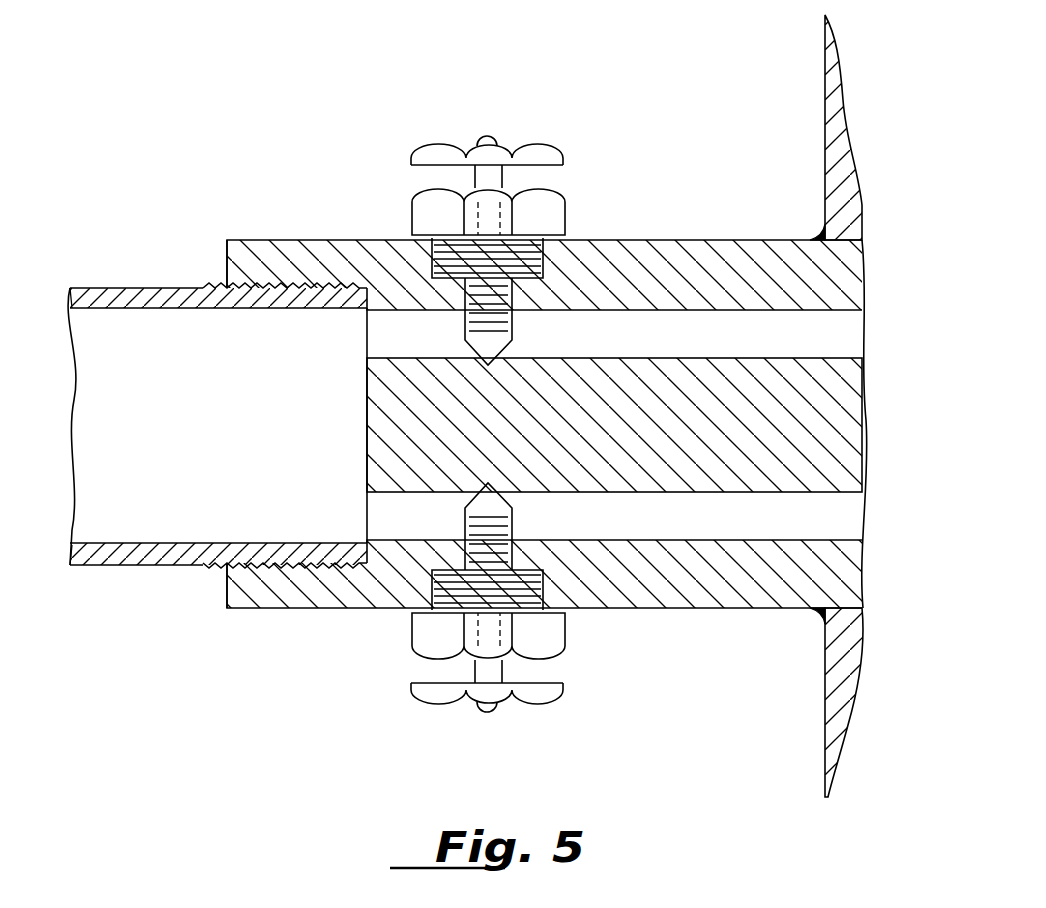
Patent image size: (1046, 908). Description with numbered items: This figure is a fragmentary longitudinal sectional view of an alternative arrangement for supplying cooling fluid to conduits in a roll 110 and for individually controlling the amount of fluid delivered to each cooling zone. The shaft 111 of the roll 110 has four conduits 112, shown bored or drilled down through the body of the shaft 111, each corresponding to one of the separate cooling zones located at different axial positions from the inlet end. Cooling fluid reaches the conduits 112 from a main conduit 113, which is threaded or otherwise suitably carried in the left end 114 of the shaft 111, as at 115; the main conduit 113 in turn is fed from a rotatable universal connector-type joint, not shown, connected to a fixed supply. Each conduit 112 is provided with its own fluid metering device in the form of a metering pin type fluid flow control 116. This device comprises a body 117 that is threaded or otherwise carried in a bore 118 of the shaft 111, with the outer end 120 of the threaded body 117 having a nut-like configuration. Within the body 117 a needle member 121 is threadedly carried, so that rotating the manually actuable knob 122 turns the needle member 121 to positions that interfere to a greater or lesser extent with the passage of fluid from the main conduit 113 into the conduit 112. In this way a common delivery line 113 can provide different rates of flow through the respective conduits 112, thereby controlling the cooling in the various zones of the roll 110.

The roll 110 is at (815, 83).
The shaft 111 is at (708, 256).
The conduits 112 is at (767, 345).
The main conduit 113 is at (167, 288).
The left end 114 is at (227, 592).
The threaded connection 115 is at (300, 545).
The metering pin type fluid flow control 116 is at (401, 202).
The body 117 is at (543, 238).
The bore 118 is at (543, 290).
The outer end 120 is at (543, 207).
The needle member 121 is at (473, 318).
The manually actuable knob 122 is at (518, 143).